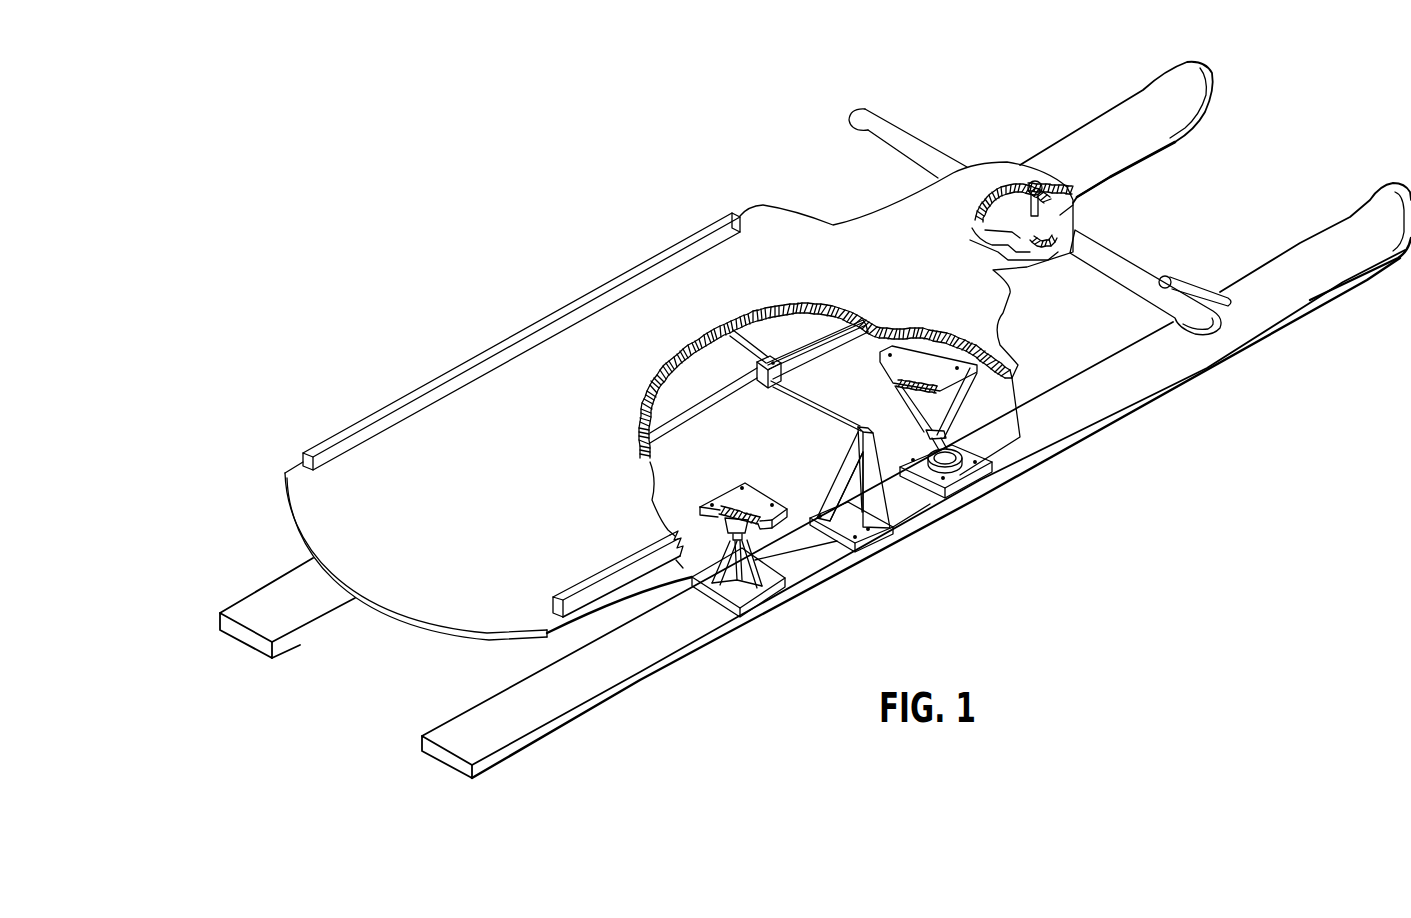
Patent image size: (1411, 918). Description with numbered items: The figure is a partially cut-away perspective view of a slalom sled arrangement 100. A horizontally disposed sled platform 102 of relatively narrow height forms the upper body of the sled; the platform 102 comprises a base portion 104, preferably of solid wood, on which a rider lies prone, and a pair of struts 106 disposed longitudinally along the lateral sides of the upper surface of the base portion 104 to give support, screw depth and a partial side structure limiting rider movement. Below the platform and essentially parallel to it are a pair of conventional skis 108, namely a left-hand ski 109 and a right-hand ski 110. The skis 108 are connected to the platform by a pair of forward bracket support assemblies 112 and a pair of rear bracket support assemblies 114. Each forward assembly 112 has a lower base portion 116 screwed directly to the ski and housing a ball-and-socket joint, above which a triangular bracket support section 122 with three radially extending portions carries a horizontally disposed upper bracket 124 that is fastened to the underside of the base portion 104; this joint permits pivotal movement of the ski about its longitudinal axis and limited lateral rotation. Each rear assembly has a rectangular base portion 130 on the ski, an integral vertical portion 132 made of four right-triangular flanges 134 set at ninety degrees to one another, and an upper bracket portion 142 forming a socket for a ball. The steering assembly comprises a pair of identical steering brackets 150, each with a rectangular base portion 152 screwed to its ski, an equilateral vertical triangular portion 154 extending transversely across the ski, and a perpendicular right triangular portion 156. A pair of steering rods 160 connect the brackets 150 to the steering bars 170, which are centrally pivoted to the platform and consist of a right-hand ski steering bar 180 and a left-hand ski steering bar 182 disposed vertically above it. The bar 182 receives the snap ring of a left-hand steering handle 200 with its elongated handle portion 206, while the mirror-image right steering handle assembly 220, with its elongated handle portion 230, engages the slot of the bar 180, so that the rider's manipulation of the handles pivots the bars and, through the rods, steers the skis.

The sled arrangement 100 is at (815, 420).
The sled platform 102 is at (679, 426).
The base portion 104 is at (483, 634).
The struts 106 is at (580, 577).
The skis 108 is at (321, 657).
The left-hand ski 109 is at (310, 636).
The right-hand ski 110 is at (913, 514).
The forward bracket support assemblies 112 is at (982, 422).
The rear bracket support assemblies 114 is at (805, 606).
The lower base portion 116 is at (1000, 462).
The bracket support section 122 is at (910, 419).
The upper bracket 124 is at (887, 370).
The base portion 130 is at (748, 588).
The vertical portion 132 is at (693, 526).
The flanges 134 is at (763, 563).
The upper bracket portion 142 is at (763, 497).
The steering brackets 150 is at (903, 507).
The rectangular base portion 152 is at (867, 543).
The triangular portion 154 is at (880, 510).
The right triangular portion 156 is at (853, 500).
The steering rods 160 is at (735, 347).
The steering bars 170 is at (817, 326).
The right-hand ski steering bar 180 is at (767, 386).
The left-hand ski steering bar 182 is at (803, 345).
The left-hand steering handle 200 is at (1021, 132).
The elongated handle portion 206 is at (885, 148).
The right steering handle assembly 220 is at (1240, 260).
The elongated handle portion 230 is at (1120, 283).